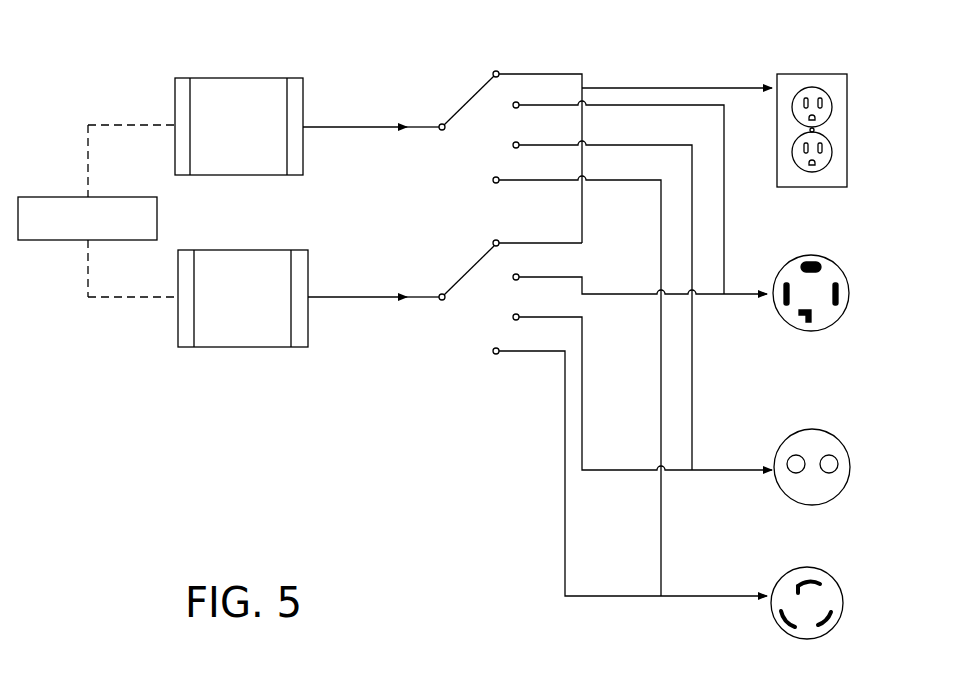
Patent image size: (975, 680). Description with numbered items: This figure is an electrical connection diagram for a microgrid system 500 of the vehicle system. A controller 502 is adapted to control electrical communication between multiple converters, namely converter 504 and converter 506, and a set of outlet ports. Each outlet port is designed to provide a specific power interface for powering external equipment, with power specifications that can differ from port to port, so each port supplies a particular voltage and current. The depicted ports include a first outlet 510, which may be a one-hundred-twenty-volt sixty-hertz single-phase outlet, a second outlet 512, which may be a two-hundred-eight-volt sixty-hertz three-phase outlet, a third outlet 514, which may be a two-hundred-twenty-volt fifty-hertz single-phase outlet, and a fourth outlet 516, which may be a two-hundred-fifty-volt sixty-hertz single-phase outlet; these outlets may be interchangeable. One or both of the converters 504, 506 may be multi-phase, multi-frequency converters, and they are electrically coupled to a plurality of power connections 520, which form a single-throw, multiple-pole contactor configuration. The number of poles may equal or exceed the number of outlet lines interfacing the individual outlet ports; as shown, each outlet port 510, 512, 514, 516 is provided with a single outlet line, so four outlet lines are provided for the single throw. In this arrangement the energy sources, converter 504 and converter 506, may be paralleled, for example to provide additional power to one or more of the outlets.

The microgrid system 500 is at (144, 78).
The controller 502 is at (40, 197).
The converter 504 is at (240, 78).
The converter 506 is at (235, 347).
The first outlet 510 is at (848, 122).
The second outlet 512 is at (850, 293).
The third outlet 514 is at (851, 467).
The fourth outlet 516 is at (843, 603).
The power connections 520 is at (576, 56).